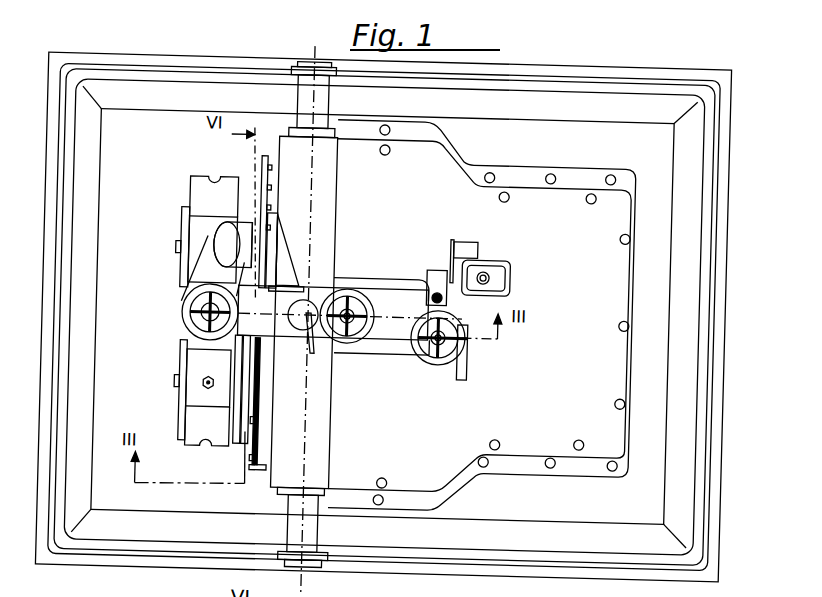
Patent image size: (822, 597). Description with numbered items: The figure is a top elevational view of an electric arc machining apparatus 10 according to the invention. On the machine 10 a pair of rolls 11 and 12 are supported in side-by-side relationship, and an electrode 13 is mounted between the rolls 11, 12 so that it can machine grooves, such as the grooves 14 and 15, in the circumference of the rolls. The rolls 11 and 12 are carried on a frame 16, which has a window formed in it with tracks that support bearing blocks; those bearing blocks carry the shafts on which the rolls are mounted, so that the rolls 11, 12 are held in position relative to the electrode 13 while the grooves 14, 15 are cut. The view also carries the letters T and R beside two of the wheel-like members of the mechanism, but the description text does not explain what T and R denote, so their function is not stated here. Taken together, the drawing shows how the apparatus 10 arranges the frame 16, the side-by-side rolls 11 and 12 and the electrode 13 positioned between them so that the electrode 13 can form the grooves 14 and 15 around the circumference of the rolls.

The apparatus 10 is at (733, 125).
The roll 11 is at (191, 241).
The roll 12 is at (196, 365).
The electrode 13 is at (205, 321).
The groove 14 is at (215, 452).
The groove 15 is at (209, 185).
The frame 16 is at (326, 430).
The take-up reel T is at (372, 306).
The supply reel R is at (433, 367).